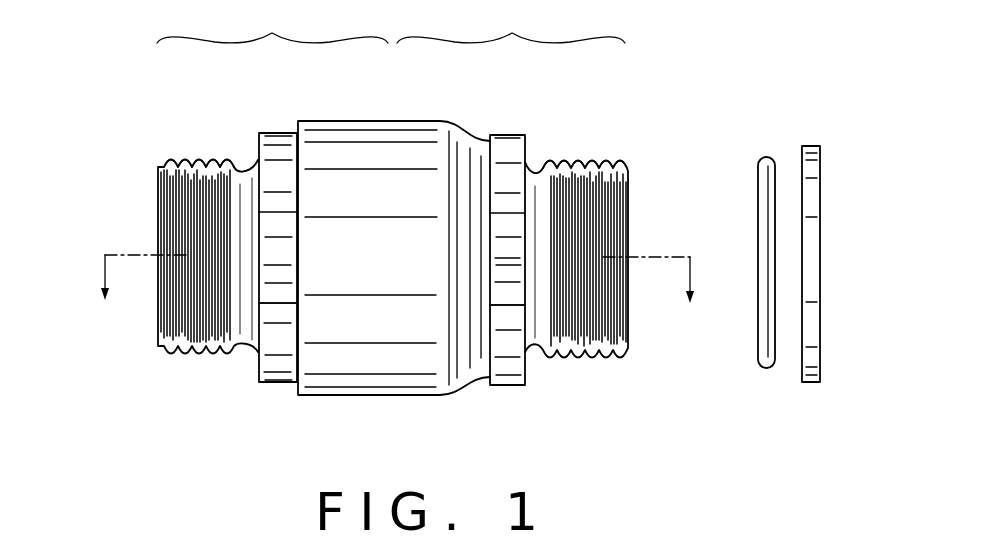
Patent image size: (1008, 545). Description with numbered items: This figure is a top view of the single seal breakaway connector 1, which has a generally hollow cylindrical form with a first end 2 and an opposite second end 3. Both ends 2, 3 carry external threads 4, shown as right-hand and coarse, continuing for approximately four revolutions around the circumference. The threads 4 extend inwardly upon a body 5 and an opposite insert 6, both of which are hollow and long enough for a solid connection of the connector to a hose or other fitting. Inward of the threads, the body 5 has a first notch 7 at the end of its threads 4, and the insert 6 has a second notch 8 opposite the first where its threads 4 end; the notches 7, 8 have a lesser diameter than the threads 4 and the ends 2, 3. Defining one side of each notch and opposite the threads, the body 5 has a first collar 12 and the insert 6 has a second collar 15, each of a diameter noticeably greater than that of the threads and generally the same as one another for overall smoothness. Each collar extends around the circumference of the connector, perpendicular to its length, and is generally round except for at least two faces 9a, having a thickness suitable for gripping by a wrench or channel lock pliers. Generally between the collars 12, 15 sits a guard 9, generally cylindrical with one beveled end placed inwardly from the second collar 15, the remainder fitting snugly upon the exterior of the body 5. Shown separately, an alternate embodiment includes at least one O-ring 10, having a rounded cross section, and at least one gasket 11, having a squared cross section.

The single seal breakaway connector 1 is at (100, 117).
The first end 2 is at (157, 215).
The second end 3 is at (397, 299).
The external threads 4 is at (190, 160).
The body 5 is at (272, 25).
The insert 6 is at (511, 25).
The first notch 7 is at (243, 170).
The second notch 8 is at (540, 174).
The guard 9 is at (348, 135).
The faces 9a is at (277, 272).
The O-ring 10 is at (765, 156).
The gasket 11 is at (808, 145).
The first collar 12 is at (277, 133).
The second collar 15 is at (497, 135).